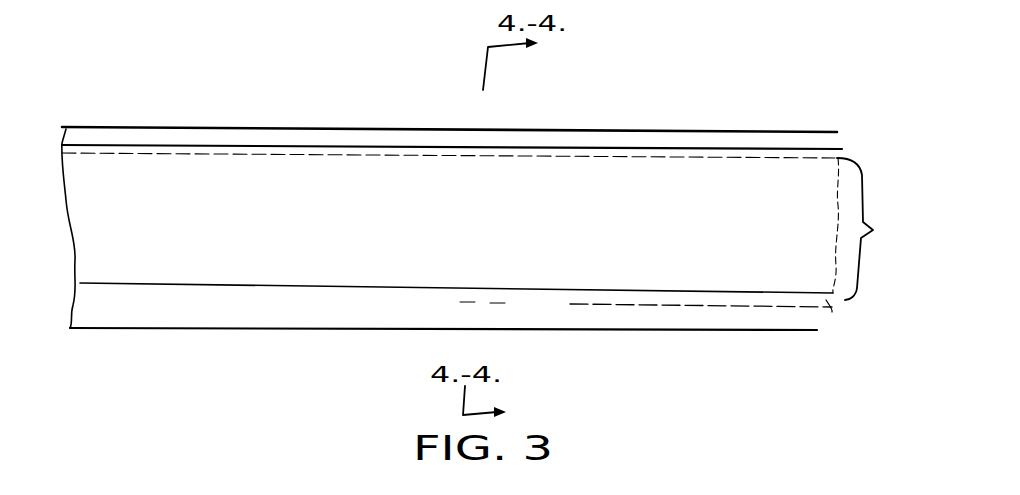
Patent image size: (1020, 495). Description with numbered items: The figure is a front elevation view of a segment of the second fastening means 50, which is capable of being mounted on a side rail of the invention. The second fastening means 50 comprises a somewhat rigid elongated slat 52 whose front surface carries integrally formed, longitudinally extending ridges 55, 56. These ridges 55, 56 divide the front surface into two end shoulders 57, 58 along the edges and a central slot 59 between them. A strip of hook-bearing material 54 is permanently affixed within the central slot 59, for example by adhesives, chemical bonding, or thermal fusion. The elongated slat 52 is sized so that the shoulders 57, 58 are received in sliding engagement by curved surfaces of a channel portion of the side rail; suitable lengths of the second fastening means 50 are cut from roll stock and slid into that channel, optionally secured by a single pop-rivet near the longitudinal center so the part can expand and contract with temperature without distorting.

The second fastening means 50 is at (74, 376).
The elongated slats 52 is at (668, 322).
The strip of hook-bearing material 54 is at (488, 250).
The longitudinally extending ridge 55 is at (838, 149).
The longitudinally extending ridge 56 is at (828, 306).
The end shoulder 57 is at (818, 143).
The end shoulder 58 is at (798, 330).
The central slot 59 is at (876, 229).